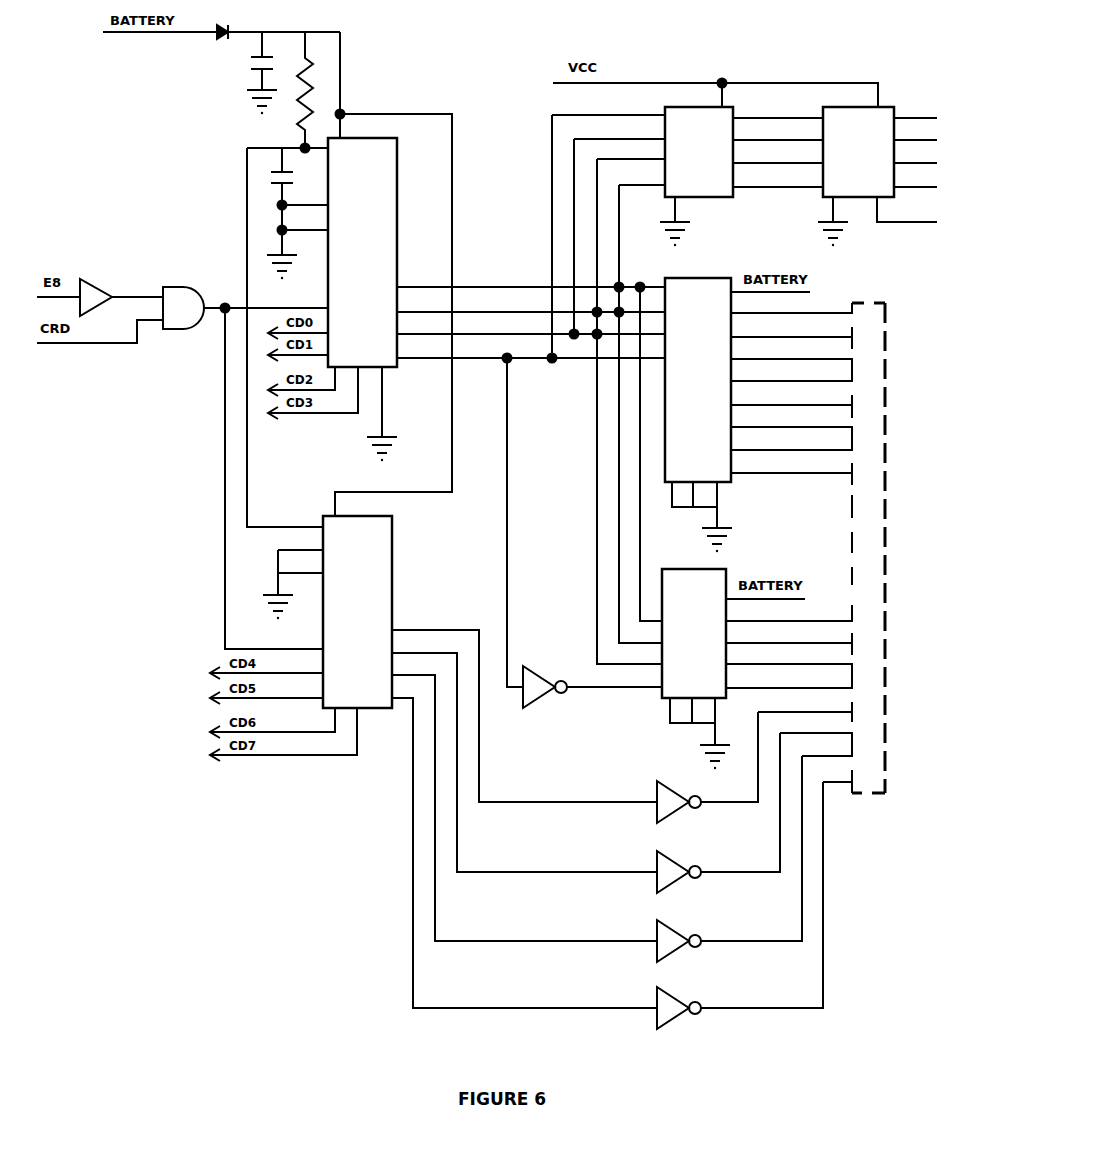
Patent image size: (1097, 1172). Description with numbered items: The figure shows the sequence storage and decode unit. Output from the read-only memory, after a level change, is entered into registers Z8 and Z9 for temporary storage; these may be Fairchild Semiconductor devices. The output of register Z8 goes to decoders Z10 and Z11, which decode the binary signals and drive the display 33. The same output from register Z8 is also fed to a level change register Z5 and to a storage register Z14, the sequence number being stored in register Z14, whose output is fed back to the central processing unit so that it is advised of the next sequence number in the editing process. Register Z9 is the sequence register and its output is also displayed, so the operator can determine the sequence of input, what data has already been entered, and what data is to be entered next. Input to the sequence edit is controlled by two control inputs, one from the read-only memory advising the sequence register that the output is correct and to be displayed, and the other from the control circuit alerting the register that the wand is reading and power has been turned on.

The display 33 is at (883, 797).
The register Z8 is at (362, 299).
The sequence register Z9 is at (357, 612).
The decoder Z10 is at (698, 415).
The decoder Z11 is at (696, 669).
The level change register Z5 is at (696, 176).
The storage register Z14 is at (856, 176).